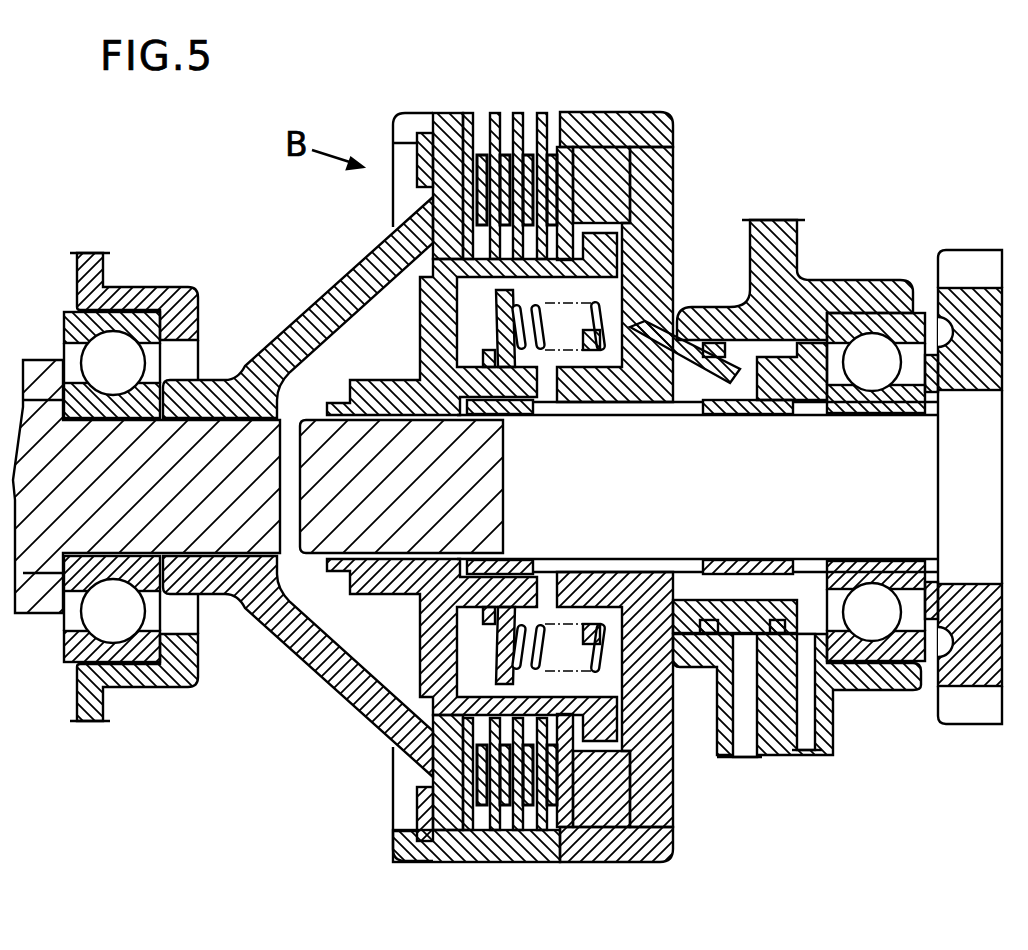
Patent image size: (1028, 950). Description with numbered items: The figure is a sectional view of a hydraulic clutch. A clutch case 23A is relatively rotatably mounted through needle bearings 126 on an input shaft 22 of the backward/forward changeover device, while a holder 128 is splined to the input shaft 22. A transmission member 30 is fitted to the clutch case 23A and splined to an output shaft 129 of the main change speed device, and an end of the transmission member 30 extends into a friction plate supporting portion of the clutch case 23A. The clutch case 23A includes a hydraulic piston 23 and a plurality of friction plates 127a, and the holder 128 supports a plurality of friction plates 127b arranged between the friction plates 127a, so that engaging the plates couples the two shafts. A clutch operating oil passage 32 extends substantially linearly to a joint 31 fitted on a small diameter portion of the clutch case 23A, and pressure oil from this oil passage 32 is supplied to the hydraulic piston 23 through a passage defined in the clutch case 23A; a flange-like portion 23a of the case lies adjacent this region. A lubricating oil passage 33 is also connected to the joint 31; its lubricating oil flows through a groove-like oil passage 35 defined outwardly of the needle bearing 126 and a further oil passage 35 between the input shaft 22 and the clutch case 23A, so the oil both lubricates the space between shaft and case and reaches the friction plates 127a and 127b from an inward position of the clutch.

The input shaft 22 is at (374, 428).
The hydraulic piston 23 is at (637, 190).
The clutch case 23A is at (652, 113).
The housing inner flange 23a is at (686, 374).
The transmission member 30 is at (325, 668).
The joint 31 is at (700, 650).
The clutch operating oil passage 32 is at (742, 752).
The lubricating oil passage 33 is at (807, 753).
The oil passage 35 is at (690, 584).
The needle bearings 126 is at (508, 415).
The friction plates 127a is at (550, 112).
The friction plates 127b is at (523, 828).
The holder 128 is at (432, 636).
The output shaft 129 is at (226, 430).